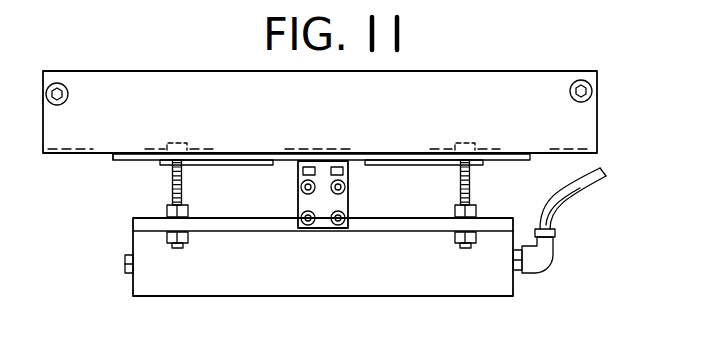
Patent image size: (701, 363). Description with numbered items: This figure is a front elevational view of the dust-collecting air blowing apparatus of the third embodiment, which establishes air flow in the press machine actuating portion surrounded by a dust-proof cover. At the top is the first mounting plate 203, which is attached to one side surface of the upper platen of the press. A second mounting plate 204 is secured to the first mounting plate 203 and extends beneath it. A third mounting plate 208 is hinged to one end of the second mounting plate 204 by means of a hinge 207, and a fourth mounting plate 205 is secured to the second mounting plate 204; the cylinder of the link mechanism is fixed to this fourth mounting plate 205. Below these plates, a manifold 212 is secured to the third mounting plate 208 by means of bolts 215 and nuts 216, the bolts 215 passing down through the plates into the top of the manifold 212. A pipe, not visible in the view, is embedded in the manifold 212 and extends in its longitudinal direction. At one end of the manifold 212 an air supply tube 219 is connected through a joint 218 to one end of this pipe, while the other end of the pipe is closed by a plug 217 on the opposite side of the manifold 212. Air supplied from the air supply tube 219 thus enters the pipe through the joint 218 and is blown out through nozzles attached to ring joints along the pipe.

The first mounting plate 203 is at (597, 107).
The second mounting plate 204 is at (530, 159).
The fourth mounting plate 205 is at (349, 178).
The hinge 207 is at (242, 166).
The third mounting plate 208 is at (117, 158).
The manifold 212 is at (485, 297).
The bolts 215 is at (172, 190).
The nuts 216 is at (167, 212).
The plug 217 is at (125, 263).
The joint 218 is at (557, 252).
The air supply tube 219 is at (578, 200).